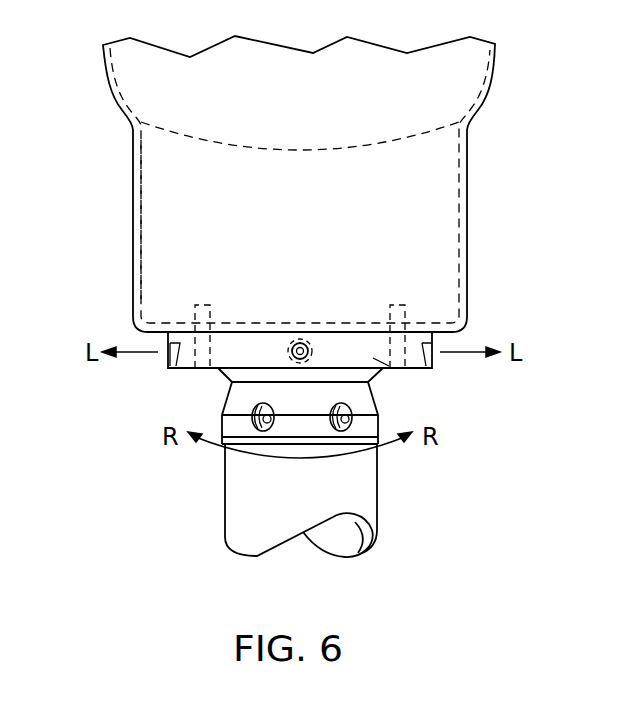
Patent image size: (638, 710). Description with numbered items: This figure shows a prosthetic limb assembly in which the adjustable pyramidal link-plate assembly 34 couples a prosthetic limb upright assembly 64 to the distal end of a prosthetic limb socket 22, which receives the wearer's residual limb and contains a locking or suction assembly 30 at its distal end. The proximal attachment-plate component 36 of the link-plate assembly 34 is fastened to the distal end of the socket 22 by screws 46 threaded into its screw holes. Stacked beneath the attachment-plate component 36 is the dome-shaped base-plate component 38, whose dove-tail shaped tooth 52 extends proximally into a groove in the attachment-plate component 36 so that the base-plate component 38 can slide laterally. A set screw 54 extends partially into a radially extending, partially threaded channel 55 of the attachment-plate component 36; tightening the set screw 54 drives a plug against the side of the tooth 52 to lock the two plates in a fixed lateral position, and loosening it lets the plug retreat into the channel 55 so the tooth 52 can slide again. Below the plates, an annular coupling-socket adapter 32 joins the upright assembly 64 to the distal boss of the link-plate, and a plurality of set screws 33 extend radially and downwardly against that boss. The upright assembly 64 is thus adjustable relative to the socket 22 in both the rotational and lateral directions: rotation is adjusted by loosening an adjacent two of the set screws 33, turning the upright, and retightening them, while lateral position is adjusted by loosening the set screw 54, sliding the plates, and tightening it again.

The prosthetic limb socket 22 is at (468, 170).
The locking or suction assembly 30 is at (152, 213).
The annular coupling-socket adapter 32 is at (228, 392).
The set screws 33 is at (262, 431).
The adjustable pyramidal link-plate assembly 34 is at (378, 366).
The proximal attachment-plate component 36 is at (244, 348).
The dome-shaped base-plate component 38 is at (218, 370).
The screws 46 is at (200, 302).
The dove-tail shaped tooth 52 is at (430, 347).
The set screw 54 is at (297, 341).
The partially threaded channel 55 is at (310, 342).
The prosthetic limb upright assembly 64 is at (232, 518).